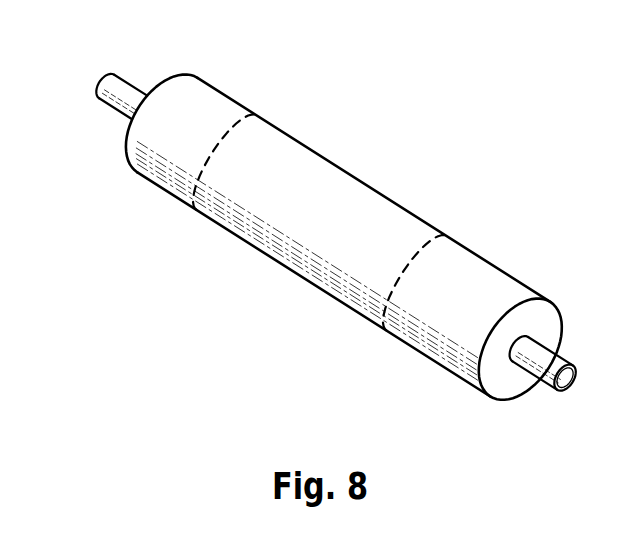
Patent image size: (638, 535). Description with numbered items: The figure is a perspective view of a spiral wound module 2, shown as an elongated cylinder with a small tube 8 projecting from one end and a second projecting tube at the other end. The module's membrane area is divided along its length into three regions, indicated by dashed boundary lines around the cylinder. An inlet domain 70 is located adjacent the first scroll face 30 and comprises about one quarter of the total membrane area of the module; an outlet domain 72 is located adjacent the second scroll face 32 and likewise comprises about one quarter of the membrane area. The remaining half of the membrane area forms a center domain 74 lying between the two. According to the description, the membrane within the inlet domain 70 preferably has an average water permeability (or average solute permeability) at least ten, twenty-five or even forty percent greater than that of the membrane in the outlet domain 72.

The spiral wound module 2 is at (246, 302).
The first end stub 8 is at (105, 100).
The first scroll face 30 is at (163, 78).
The second scroll face 32 is at (507, 388).
The inlet domain 70 is at (215, 100).
The outlet domain 72 is at (493, 277).
The center domain 74 is at (338, 178).